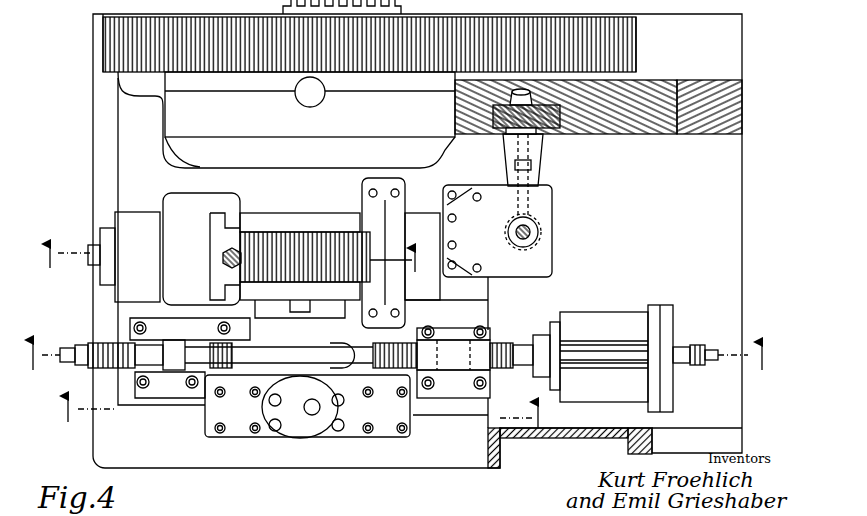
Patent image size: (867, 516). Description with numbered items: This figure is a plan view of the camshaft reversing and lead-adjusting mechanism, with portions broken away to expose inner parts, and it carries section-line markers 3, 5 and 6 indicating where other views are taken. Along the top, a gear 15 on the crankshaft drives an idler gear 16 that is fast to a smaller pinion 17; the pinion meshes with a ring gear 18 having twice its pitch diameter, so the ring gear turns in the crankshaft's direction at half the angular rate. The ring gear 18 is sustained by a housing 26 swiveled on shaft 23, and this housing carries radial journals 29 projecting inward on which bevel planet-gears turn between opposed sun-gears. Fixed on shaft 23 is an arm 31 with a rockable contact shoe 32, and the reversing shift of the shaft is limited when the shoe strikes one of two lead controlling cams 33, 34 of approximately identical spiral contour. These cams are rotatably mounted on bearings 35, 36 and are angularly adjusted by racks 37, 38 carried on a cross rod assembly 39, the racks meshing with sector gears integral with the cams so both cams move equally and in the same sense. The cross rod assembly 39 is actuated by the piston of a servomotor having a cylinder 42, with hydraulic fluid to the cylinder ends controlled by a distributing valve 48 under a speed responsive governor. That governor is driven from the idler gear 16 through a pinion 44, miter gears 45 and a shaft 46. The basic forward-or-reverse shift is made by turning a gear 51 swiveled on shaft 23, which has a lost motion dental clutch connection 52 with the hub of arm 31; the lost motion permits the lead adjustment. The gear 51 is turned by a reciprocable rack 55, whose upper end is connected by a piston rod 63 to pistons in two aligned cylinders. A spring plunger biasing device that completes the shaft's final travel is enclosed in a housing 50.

The gear 15 is at (700, 137).
The idler gear 16 is at (612, 137).
The pinion 17 is at (628, 45).
The ring gear 18 is at (112, 47).
The shaft 23 is at (302, 358).
The housing 26 is at (213, 152).
The radial journals 29 is at (318, 104).
The arm 31 is at (240, 373).
The contact shoe 32 is at (178, 324).
The lead controlling cam 33 is at (160, 398).
The lead controlling cam 34 is at (530, 340).
The bearing 35 is at (160, 318).
The bearing 36 is at (450, 330).
The rack 37 is at (100, 340).
The rack 38 is at (398, 372).
The cross rod assembly 39 is at (550, 325).
The cylinder 42 is at (622, 318).
The pinion 44 is at (498, 132).
The miter gears 45 is at (540, 228).
The shaft 46 is at (530, 240).
The distributing valve 48 is at (590, 375).
The housing 50 is at (305, 430).
The gear 51 is at (300, 238).
The lost motion dental clutch connection 52 is at (300, 303).
The rack 55 is at (228, 241).
The piston rod 63 is at (222, 262).
The section line 3 is at (392, 355).
The section line 5 is at (227, 259).
The section line 6 is at (298, 414).